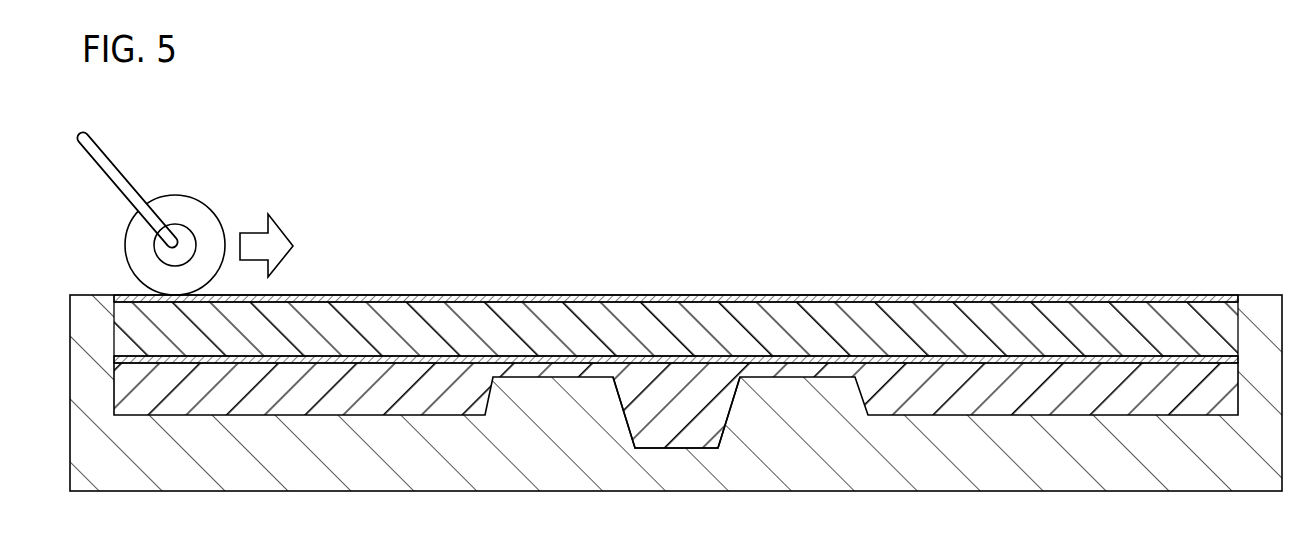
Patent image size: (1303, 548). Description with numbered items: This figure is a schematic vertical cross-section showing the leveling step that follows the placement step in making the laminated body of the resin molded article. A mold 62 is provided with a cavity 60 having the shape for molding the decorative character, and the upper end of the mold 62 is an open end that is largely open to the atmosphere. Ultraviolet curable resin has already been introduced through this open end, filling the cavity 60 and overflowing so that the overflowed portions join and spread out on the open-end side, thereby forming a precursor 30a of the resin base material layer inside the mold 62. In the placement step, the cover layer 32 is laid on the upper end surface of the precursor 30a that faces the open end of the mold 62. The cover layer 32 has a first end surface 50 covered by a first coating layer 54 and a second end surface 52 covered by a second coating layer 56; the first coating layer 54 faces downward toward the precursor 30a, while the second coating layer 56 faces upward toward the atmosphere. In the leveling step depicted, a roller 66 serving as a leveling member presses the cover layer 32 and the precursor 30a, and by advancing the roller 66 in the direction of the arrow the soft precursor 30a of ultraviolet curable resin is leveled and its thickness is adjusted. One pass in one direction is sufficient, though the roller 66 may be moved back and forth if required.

The roller 66 is at (197, 200).
The second coating layer 56 is at (360, 298).
The first coating layer 54 is at (427, 360).
The cavity 60 is at (722, 414).
The precursor 30a is at (915, 385).
The cover layer 32 is at (953, 317).
The second end surface 52 is at (1096, 300).
The first end surface 50 is at (1168, 358).
The mold 62 is at (1063, 478).